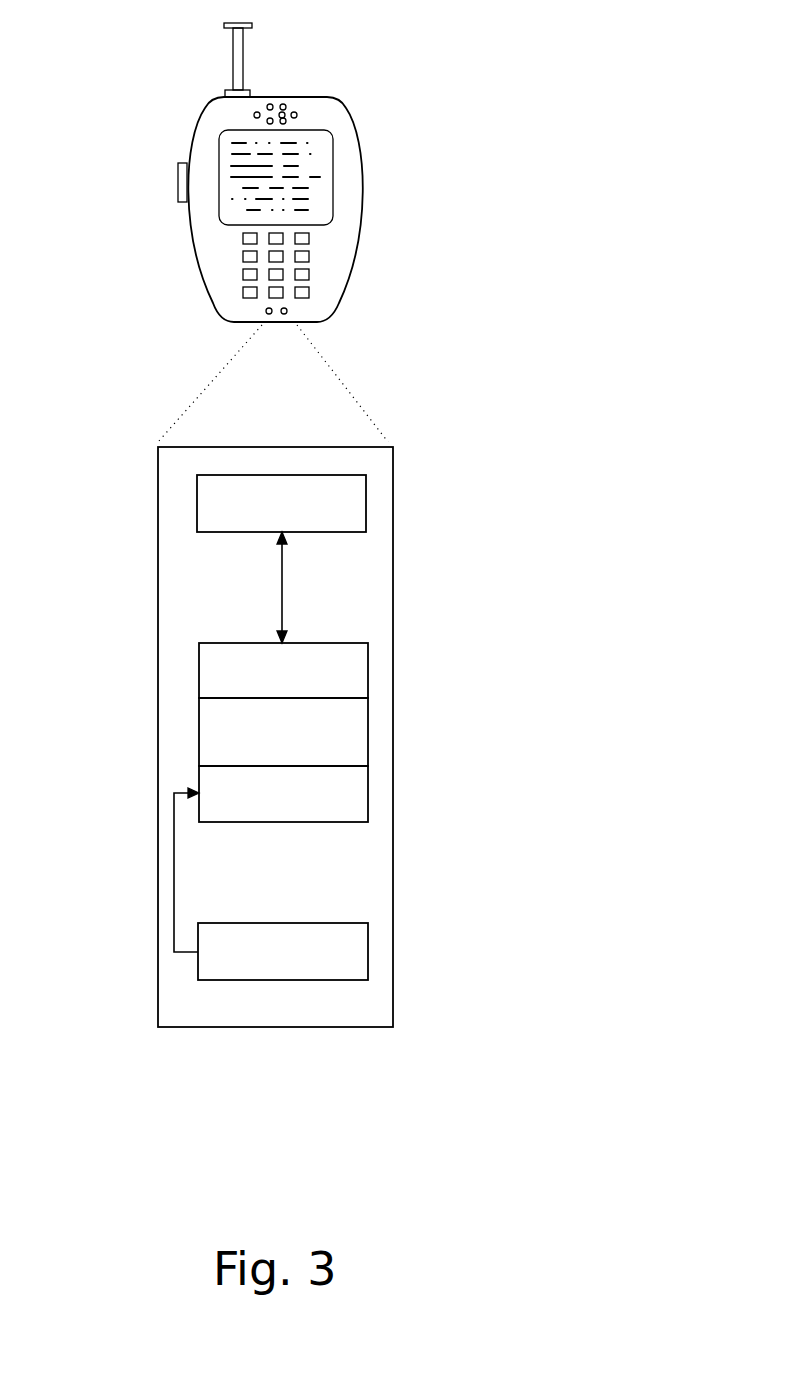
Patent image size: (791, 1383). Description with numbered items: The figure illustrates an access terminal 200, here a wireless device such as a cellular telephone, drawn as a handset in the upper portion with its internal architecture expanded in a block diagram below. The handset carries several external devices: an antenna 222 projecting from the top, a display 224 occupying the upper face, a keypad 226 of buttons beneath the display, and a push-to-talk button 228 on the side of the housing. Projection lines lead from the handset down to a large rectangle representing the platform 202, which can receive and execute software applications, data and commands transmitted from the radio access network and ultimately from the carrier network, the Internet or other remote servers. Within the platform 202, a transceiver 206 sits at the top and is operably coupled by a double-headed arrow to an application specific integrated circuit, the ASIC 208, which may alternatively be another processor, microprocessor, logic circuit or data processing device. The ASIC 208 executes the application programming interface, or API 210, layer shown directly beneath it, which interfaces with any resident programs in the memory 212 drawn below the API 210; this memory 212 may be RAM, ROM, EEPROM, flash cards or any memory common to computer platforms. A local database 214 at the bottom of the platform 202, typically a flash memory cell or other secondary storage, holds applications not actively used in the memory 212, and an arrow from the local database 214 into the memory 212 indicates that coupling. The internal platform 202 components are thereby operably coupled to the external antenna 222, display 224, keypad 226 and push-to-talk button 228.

The access terminal 200 is at (343, 300).
The platform 202 is at (157, 643).
The transceiver 206 is at (366, 504).
The application specific integrated circuit (ASIC) 208 is at (368, 678).
The application programming interface (API) 210 is at (368, 726).
The memory 212 is at (368, 793).
The local database 214 is at (368, 933).
The antenna 222 is at (243, 38).
The display 224 is at (335, 164).
The keypad 226 is at (309, 256).
The push-to-talk button 228 is at (178, 174).